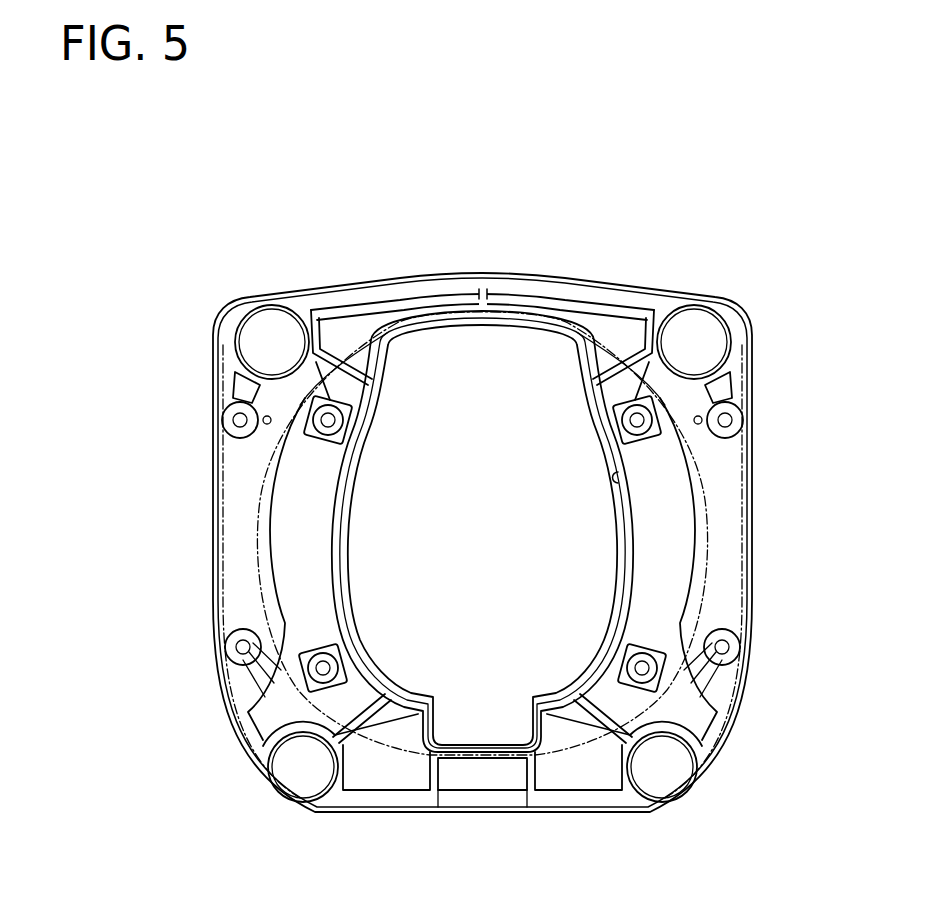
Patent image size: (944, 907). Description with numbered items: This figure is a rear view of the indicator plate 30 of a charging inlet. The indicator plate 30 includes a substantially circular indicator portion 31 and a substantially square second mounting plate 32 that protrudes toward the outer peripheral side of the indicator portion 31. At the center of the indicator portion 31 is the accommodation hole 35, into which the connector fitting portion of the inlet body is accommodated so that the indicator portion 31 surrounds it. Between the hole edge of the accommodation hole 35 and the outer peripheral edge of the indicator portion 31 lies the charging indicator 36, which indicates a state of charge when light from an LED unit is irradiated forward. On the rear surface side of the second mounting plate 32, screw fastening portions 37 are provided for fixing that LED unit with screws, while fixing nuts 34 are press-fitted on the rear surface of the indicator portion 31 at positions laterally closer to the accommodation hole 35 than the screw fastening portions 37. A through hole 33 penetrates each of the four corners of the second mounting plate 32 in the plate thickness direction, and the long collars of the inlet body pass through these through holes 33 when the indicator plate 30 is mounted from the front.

The indicator plate 30 is at (493, 172).
The indicator portion 31 is at (705, 459).
The second mounting plate 32 is at (598, 318).
The through hole 33 is at (262, 322).
The fixing nut 34 is at (322, 406).
The accommodation hole 35 is at (612, 482).
The charging indicator 36 is at (290, 534).
The screw fastening portion 37 is at (232, 420).